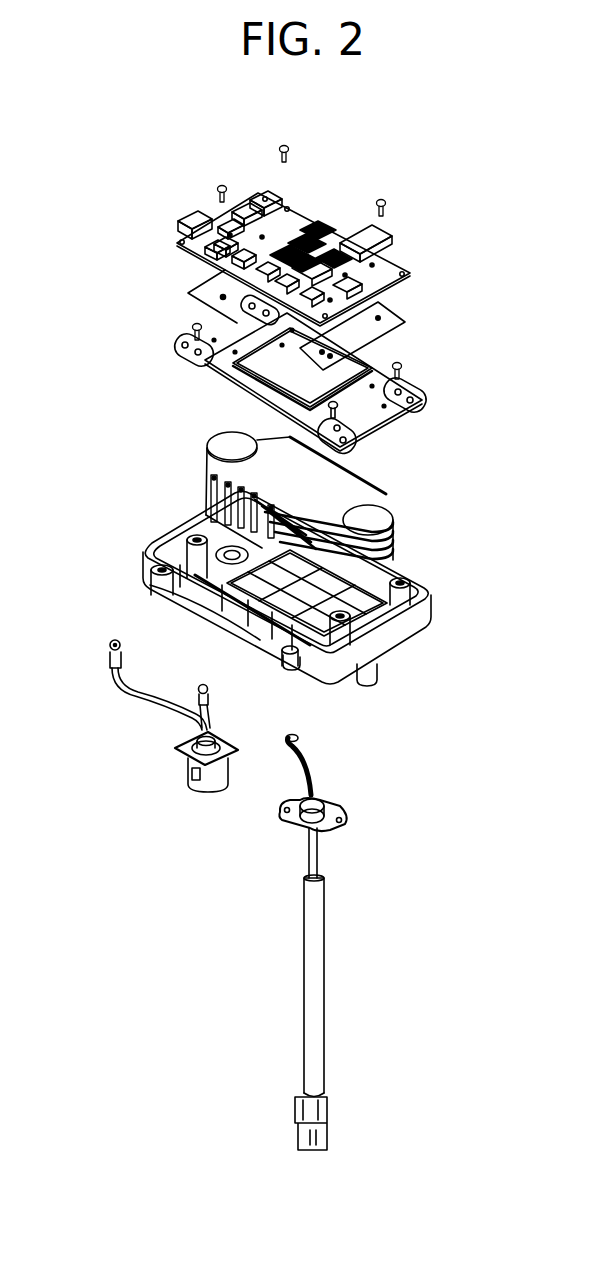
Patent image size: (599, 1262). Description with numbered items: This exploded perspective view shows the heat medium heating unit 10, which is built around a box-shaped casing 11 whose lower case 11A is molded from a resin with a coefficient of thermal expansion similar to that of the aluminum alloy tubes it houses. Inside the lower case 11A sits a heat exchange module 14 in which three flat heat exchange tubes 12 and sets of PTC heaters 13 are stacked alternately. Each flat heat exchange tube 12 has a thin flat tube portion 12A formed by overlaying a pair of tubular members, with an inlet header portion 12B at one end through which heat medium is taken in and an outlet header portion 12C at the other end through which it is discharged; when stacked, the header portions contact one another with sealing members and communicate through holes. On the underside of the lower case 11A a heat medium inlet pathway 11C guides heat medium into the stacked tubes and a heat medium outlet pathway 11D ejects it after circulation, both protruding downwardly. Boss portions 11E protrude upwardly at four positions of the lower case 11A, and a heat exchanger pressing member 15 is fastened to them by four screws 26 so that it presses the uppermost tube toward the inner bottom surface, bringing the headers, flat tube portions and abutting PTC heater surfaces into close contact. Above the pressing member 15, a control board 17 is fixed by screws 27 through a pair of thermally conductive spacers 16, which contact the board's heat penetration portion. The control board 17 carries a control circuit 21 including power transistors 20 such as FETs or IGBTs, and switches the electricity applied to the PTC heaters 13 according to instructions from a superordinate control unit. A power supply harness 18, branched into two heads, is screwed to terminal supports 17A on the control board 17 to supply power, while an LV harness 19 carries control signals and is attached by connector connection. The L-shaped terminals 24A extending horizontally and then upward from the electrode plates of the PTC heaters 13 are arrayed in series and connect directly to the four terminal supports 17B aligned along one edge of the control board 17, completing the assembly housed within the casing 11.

The heat medium heating unit 10 is at (446, 186).
The casing 11 is at (276, 624).
The lower case 11A is at (412, 628).
The heat medium inlet pathway 11C is at (226, 550).
The heat medium outlet pathway 11D is at (367, 686).
The boss portions 11E is at (408, 586).
The flat heat exchange tube 12 is at (317, 460).
The flat tube portion 12A is at (352, 490).
The inlet header portion 12B is at (218, 440).
The outlet header portion 12C is at (372, 517).
The PTC heaters 13 is at (272, 540).
The heat exchange module 14 is at (412, 502).
The heat exchanger pressing member 15 is at (385, 405).
The spacers 16 is at (207, 294).
The control board 17 is at (362, 254).
The terminal supports 17A is at (190, 229).
The terminal supports 17B is at (228, 262).
The power supply harness 18 is at (185, 765).
The LV harness 19 is at (310, 852).
The power transistors 20 is at (218, 228).
The control circuit 21 is at (304, 222).
The terminals 24A is at (212, 500).
The screws 26 is at (192, 327).
The screws 27 is at (381, 199).